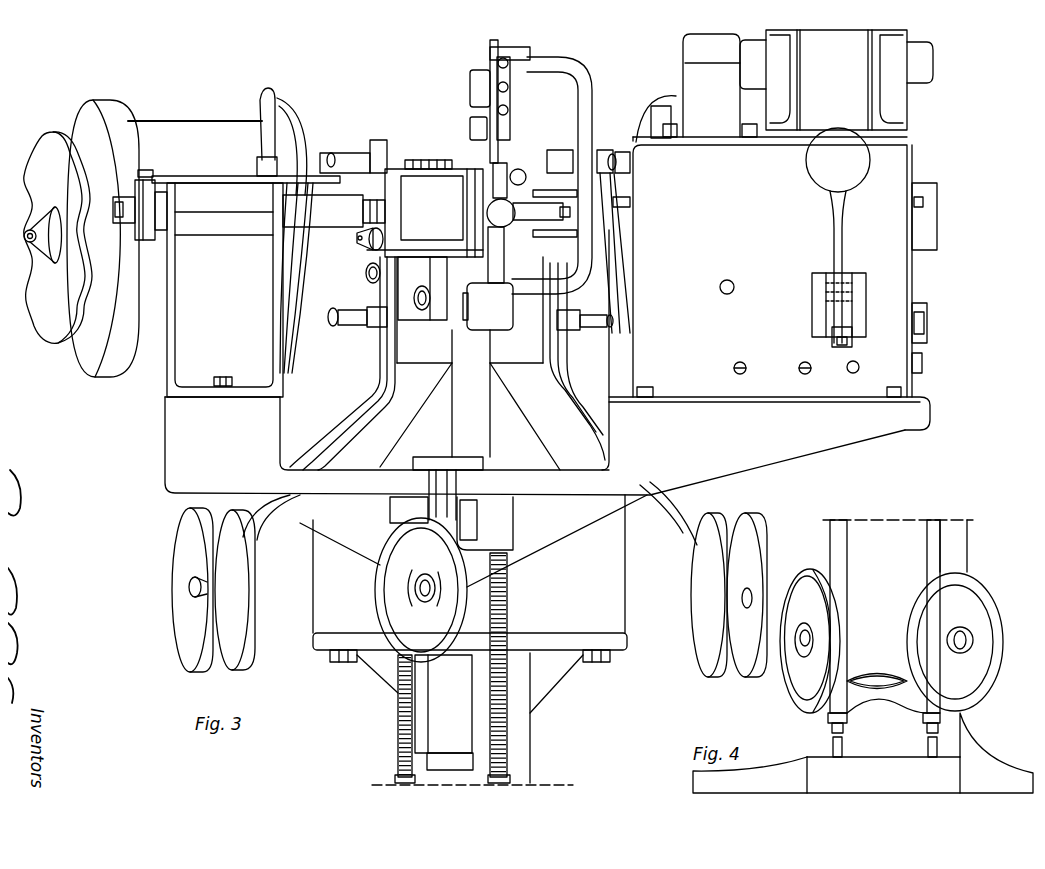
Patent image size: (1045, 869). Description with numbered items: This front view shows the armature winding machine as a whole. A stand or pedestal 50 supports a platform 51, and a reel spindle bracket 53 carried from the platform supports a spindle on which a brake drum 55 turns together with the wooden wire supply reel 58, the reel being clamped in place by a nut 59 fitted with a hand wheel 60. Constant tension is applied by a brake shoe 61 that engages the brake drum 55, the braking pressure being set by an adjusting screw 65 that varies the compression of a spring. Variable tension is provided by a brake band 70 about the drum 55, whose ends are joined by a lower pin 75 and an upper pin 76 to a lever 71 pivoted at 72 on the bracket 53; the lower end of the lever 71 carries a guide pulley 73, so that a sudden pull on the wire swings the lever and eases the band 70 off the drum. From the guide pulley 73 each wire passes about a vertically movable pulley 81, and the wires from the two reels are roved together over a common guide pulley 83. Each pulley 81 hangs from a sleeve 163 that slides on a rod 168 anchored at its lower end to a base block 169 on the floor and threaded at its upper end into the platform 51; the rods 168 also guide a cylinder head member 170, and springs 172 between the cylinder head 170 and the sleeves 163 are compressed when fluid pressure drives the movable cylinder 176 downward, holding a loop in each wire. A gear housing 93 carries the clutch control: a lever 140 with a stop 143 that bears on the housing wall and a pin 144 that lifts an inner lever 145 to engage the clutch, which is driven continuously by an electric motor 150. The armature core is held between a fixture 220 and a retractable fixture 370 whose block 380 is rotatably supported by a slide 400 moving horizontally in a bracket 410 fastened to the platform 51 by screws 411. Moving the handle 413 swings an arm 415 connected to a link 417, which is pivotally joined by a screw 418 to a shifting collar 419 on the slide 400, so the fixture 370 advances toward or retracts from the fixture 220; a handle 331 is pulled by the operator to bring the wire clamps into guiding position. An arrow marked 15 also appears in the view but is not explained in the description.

In FIG. 3, the direction arrow 15 is at (435, 104).
In FIG. 3, the stand or pedestal 50 is at (532, 744).
In FIG. 4, the stand or pedestal 50 is at (968, 542).
In FIG. 3, the platform 51 is at (164, 452).
In FIG. 3, the reel spindle bracket 53 is at (415, 321).
In FIG. 3, the brake drum 55 is at (348, 327).
In FIG. 3, the wire supply reel 58 is at (86, 100).
In FIG. 3, the nut 59 is at (29, 250).
In FIG. 3, the hand wheel 60 is at (40, 165).
In FIG. 3, the brake shoe 61 is at (350, 273).
In FIG. 3, the adjusting screw 65 is at (356, 239).
In FIG. 3, the brake band 70 is at (330, 153).
In FIG. 3, the lever 71 is at (385, 155).
In FIG. 3, the pivot 72 is at (380, 278).
In FIG. 3, the guide pulley 73 is at (175, 658).
In FIG. 3, the pin 75 is at (327, 319).
In FIG. 3, the pin 76 is at (368, 153).
In FIG. 4, the pulley 81 is at (786, 698).
In FIG. 3, the common guide pulley 83 is at (374, 584).
In FIG. 3, the gear housing 93 is at (914, 280).
In FIG. 3, the lever 140 is at (866, 158).
In FIG. 3, the stop 143 is at (832, 343).
In FIG. 3, the pin 144 is at (842, 346).
In FIG. 3, the lever 145 is at (842, 322).
In FIG. 3, the electric motor 150 is at (910, 110).
In FIG. 3, the sleeve 163 is at (395, 781).
In FIG. 4, the sleeve 163 is at (927, 550).
In FIG. 3, the rod 168 is at (398, 740).
In FIG. 4, the rod 168 is at (923, 747).
In FIG. 4, the base block 169 is at (947, 777).
In FIG. 3, the cylinder head member 170 is at (514, 526).
In FIG. 3, the springs 172 is at (397, 690).
In FIG. 3, the movable cylinder 176 is at (442, 760).
In FIG. 3, the fixture 220 is at (527, 185).
In FIG. 3, the handle 331 is at (512, 165).
In FIG. 3, the fixture 370 is at (433, 160).
In FIG. 3, the block 380 is at (368, 211).
In FIG. 3, the slide 400 is at (160, 207).
In FIG. 3, the bracket 410 is at (170, 333).
In FIG. 3, the screws 411 is at (222, 388).
In FIG. 3, the handle 413 is at (258, 103).
In FIG. 3, the arm 415 is at (288, 180).
In FIG. 3, the link 417 is at (208, 177).
In FIG. 3, the screw 418 is at (147, 170).
In FIG. 3, the shifting collar 419 is at (146, 240).